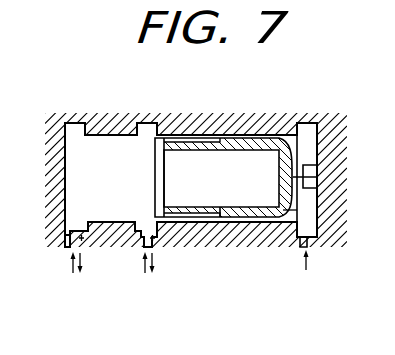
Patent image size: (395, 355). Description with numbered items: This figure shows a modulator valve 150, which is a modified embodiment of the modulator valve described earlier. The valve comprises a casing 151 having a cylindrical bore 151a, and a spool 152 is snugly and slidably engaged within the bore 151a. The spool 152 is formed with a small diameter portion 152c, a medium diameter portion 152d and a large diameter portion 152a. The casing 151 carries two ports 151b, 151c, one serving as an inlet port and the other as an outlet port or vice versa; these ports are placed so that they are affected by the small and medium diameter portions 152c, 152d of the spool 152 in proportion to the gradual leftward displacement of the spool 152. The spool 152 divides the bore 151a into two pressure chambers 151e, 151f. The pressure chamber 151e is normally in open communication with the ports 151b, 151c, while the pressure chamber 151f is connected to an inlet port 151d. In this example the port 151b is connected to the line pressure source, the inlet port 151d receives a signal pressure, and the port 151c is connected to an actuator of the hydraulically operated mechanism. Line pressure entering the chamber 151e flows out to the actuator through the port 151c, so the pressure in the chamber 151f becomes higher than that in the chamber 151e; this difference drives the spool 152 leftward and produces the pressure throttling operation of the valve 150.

The modulator valve 150 is at (163, 113).
The casing 151 is at (212, 127).
The cylindrical bore 151a is at (102, 128).
The port 151b is at (84, 243).
The port 151c is at (160, 246).
The inlet port 151d is at (300, 252).
The pressure chamber 151e is at (88, 120).
The pressure chamber 151f is at (311, 130).
The spool 152 is at (266, 134).
The large diameter portion 152a is at (253, 223).
The small diameter portion 152c is at (190, 223).
The medium diameter portion 152d is at (156, 225).